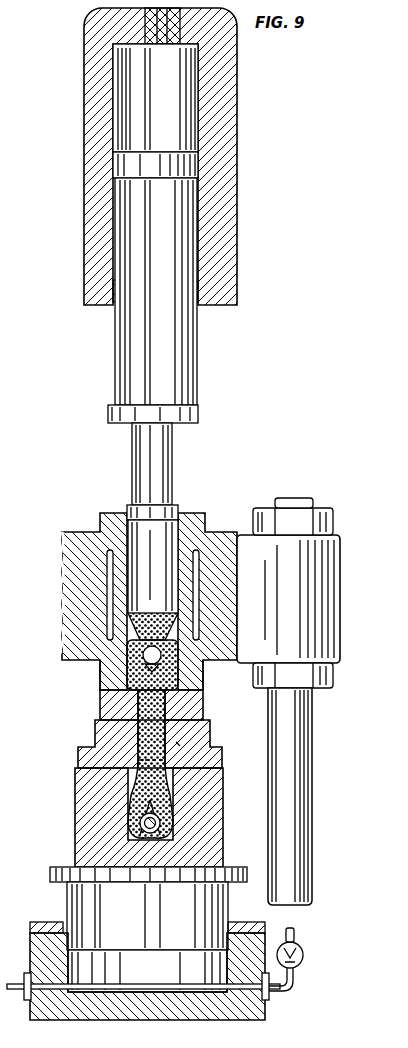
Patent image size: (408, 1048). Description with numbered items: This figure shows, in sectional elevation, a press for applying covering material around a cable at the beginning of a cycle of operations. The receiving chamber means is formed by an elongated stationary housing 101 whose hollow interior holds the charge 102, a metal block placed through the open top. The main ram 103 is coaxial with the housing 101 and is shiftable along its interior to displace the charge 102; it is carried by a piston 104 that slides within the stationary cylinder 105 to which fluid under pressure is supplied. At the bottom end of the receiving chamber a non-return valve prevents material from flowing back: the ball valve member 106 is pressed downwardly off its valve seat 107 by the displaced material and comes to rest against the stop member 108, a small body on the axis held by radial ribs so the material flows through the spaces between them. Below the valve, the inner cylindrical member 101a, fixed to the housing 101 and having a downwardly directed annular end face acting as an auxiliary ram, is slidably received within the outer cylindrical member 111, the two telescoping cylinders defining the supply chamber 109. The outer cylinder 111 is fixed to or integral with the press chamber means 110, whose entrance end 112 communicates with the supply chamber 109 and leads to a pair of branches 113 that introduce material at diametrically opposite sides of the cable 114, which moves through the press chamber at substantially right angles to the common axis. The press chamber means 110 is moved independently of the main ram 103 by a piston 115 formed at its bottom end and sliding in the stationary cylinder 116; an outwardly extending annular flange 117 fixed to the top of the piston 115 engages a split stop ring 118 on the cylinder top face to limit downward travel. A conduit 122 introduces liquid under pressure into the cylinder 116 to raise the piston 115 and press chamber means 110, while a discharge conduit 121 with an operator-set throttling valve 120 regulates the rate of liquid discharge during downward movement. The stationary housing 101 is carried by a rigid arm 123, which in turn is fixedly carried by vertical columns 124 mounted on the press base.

The receiving chamber means housing 101 is at (120, 513).
The inner cylindrical member 101a is at (178, 744).
The charge 102 is at (150, 545).
The main ram 103 is at (132, 447).
The piston 104 is at (115, 371).
The stationary cylinder 105 is at (237, 223).
The ball valve member 106 is at (115, 672).
The valve seat 107 is at (142, 648).
The stop member 108 is at (180, 675).
The supply chamber 109 is at (178, 760).
The press chamber means 110 is at (75, 827).
The outer cylindrical member 111 is at (100, 733).
The entrance end 112 is at (166, 790).
The branches 113 is at (130, 815).
The cable 114 is at (150, 835).
The piston 115 is at (82, 890).
The stationary cylinder 116 is at (180, 1003).
The annular flange 117 is at (60, 853).
The split stop ring 118 is at (50, 924).
The throttling valve 120 is at (300, 948).
The discharge conduit 121 is at (295, 980).
The conduit 122 is at (14, 990).
The rigid arm 123 is at (315, 600).
The vertical columns 124 is at (300, 826).